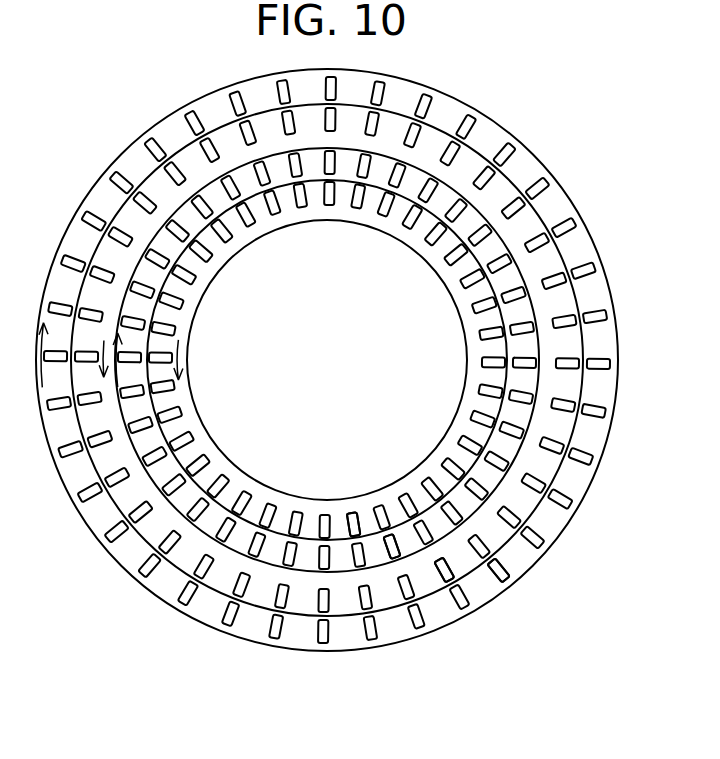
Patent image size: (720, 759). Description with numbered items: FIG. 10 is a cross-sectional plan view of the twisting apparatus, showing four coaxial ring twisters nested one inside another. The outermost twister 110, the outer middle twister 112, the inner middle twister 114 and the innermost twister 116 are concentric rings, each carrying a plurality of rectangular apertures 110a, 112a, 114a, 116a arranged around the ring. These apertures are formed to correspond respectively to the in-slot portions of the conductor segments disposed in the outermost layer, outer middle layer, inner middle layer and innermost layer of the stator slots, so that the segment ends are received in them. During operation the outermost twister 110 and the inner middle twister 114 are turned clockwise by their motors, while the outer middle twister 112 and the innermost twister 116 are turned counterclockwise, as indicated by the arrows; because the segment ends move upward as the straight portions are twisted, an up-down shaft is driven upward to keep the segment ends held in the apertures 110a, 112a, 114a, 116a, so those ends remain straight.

The outermost twister 110 is at (490, 137).
The outer middle twister 112 is at (495, 193).
The inner middle twister 114 is at (498, 247).
The innermost twister 116 is at (480, 290).
The rectangular apertures 110a is at (495, 575).
The rectangular apertures 112a is at (442, 577).
The rectangular apertures 114a is at (388, 550).
The rectangular apertures 116a is at (351, 524).